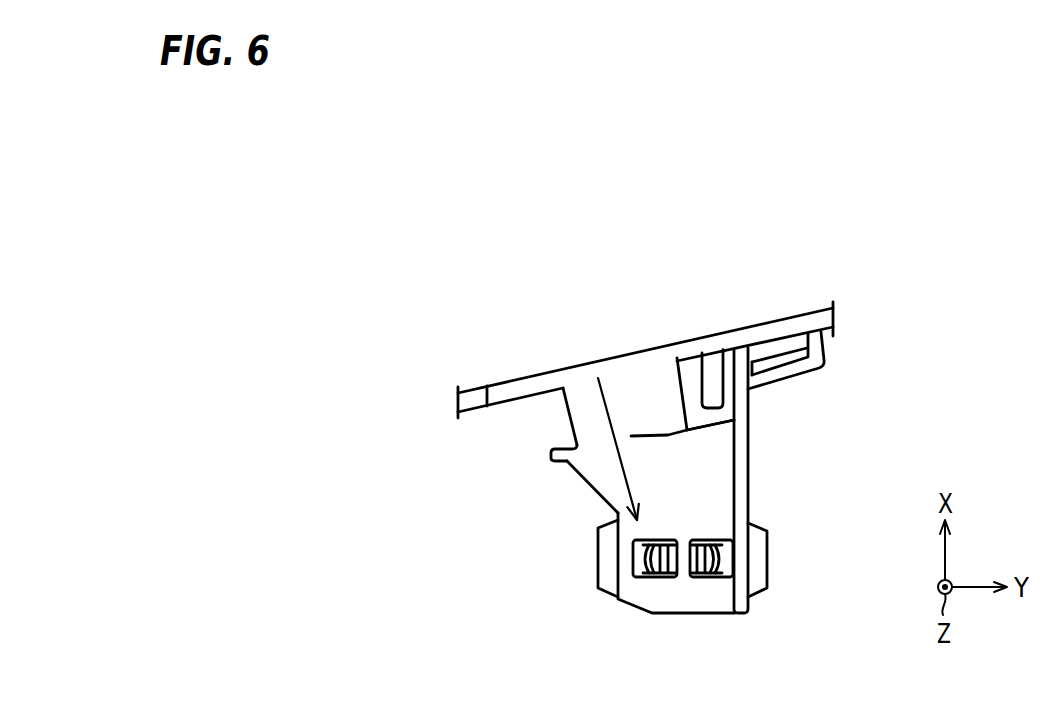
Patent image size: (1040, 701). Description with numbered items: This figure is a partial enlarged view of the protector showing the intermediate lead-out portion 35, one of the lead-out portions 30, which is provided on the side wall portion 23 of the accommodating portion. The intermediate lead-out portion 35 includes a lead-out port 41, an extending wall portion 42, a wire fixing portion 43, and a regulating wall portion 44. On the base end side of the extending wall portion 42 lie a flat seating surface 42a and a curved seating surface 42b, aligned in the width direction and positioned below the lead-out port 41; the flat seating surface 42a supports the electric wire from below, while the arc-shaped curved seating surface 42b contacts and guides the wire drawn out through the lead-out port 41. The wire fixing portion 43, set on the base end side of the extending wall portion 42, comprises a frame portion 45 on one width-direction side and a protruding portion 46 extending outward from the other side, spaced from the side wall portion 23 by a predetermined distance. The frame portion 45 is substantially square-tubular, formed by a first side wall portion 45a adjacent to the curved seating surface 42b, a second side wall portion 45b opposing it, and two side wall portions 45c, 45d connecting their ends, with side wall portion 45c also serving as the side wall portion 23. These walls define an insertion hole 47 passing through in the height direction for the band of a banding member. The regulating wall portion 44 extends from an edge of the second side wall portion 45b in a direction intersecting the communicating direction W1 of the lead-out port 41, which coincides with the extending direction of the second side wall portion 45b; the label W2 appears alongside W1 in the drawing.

The side wall portion 23 is at (820, 318).
The lead-out port 41 is at (490, 403).
The extending wall portion 42 is at (635, 486).
The flat seating surface 42a is at (583, 402).
The curved seating surface 42b is at (633, 403).
The wire fixing portion 43 is at (672, 404).
The regulating wall portion 44 is at (745, 603).
The frame portion 45 is at (744, 358).
The first side wall portion 45a is at (688, 388).
The second side wall portion 45b is at (742, 362).
The side wall portion 45c is at (708, 348).
The side wall portion 45d is at (725, 412).
The protruding portion 46 is at (556, 461).
The insertion hole 47 is at (712, 382).
The intermediate lead-out portion 35 is at (743, 558).
The lead-out portions 30 is at (746, 560).
The communicating direction W1 is at (617, 468).
The insertion direction W2 is at (589, 460).